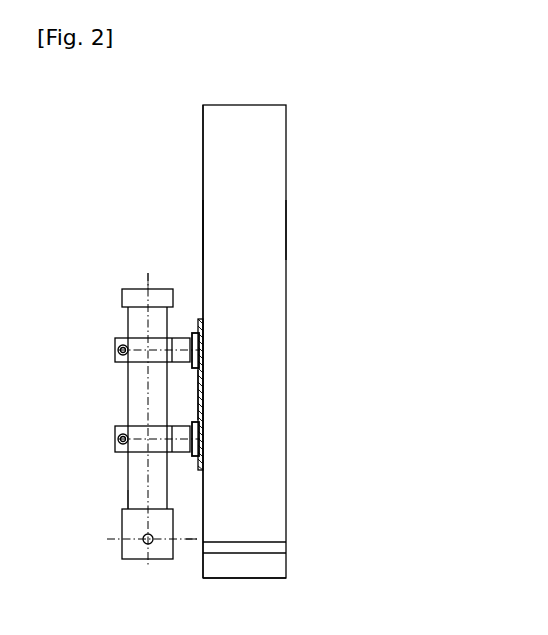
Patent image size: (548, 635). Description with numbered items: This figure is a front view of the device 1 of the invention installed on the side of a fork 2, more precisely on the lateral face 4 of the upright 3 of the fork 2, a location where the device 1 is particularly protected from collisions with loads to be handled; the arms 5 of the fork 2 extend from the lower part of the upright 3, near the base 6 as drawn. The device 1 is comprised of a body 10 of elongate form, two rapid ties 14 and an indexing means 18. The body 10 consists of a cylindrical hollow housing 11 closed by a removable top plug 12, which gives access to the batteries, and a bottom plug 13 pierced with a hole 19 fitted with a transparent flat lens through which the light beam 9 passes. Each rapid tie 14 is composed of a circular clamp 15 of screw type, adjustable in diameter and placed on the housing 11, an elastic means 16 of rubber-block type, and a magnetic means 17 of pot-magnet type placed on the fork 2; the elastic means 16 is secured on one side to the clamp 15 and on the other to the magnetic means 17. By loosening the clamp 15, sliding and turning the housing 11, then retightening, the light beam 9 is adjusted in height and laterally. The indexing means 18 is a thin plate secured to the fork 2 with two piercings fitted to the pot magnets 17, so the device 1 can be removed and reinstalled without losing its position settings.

The device 1 is at (137, 270).
The fork 2 is at (317, 178).
The upright 3 is at (190, 170).
The lateral face 4 is at (203, 240).
The arms 5 is at (268, 560).
The base plate 6 is at (262, 542).
The light beam 9 is at (187, 540).
The body 10 is at (122, 494).
The cylindrical hollow housing 11 is at (140, 455).
The top plug 12 is at (137, 297).
The bottom plug 13 is at (161, 525).
The rapid tie 14 is at (110, 329).
The circular clamp 15 is at (129, 430).
The elastic means 16 is at (201, 368).
The magnetic means 17 is at (200, 343).
The indexing means 18 is at (203, 323).
The hole 19 is at (149, 541).